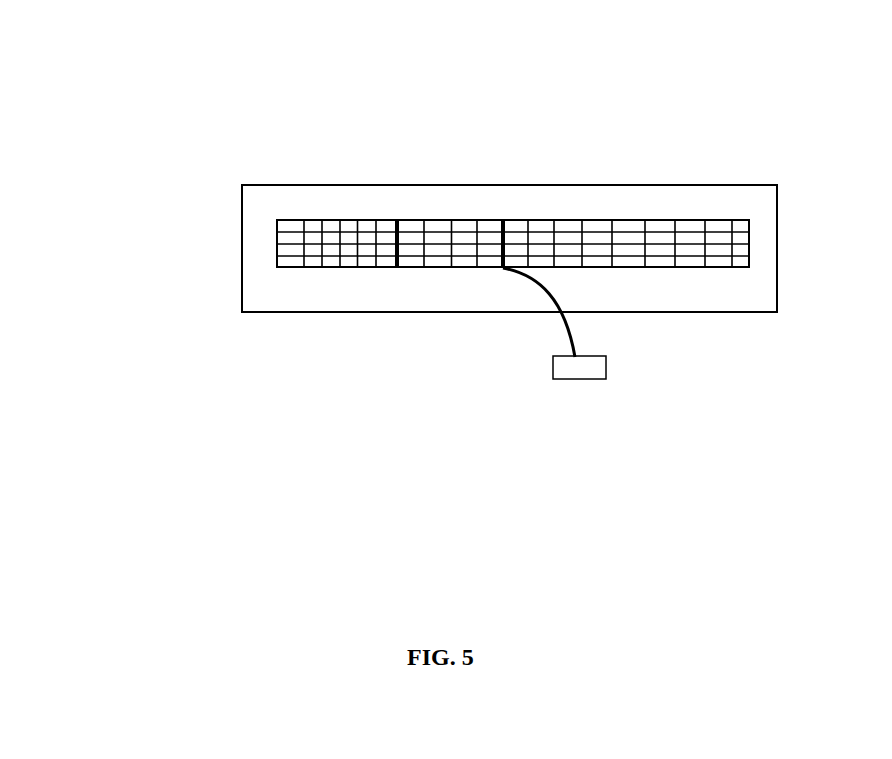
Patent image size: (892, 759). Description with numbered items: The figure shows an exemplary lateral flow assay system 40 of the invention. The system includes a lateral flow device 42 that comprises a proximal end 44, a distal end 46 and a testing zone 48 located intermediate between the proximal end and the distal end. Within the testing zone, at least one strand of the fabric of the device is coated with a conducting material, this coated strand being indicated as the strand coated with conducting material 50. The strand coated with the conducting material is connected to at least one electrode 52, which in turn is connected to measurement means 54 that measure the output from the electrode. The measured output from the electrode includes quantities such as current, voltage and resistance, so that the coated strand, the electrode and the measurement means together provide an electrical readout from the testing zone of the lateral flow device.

The lateral flow assay system 40 is at (95, 60).
The lateral flow device 42 is at (770, 190).
The proximal end 44 is at (730, 212).
The distal end 46 is at (283, 205).
The testing zone 48 is at (493, 212).
The strand coated with conducting material 50 is at (500, 268).
The electrode 52 is at (577, 323).
The measurement means 54 is at (587, 380).